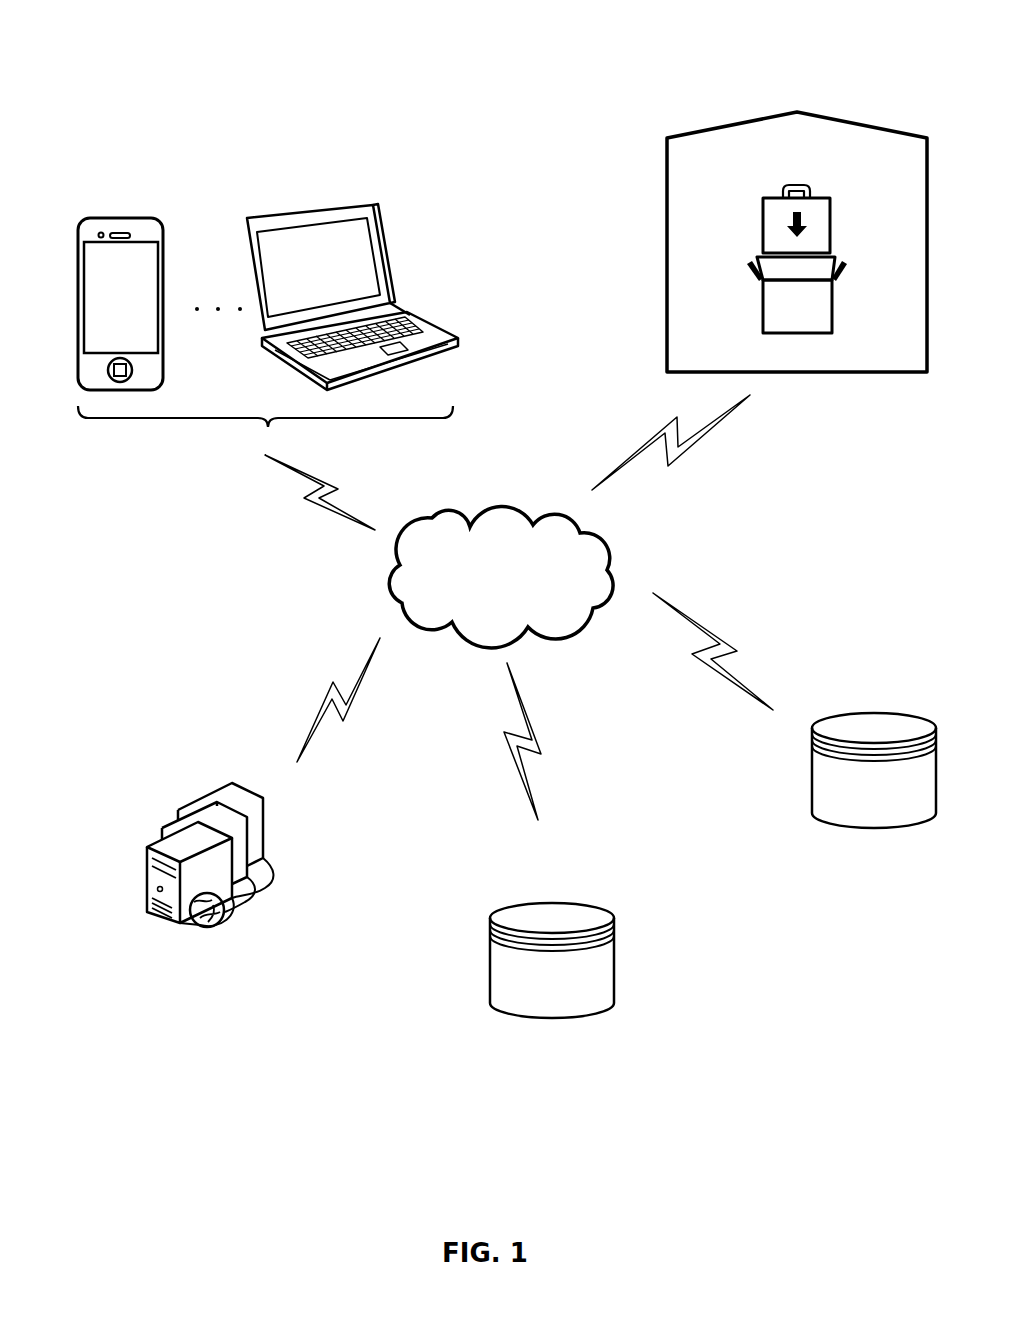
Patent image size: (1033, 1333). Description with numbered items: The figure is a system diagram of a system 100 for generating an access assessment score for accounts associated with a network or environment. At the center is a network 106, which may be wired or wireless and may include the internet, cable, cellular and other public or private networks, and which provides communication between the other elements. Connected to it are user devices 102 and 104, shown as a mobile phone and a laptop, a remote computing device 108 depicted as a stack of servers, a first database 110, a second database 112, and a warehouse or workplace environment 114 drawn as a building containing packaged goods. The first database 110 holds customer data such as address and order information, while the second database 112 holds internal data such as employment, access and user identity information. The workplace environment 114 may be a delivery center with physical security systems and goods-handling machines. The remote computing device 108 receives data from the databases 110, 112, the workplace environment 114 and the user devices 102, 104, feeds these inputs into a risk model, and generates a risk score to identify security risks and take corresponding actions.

The system 100 is at (85, 60).
The user device 102 is at (133, 218).
The user device 104 is at (337, 209).
The network 106 is at (427, 520).
The remote computing device 108 is at (200, 795).
The first database 110 is at (840, 714).
The second database 112 is at (597, 906).
The workplace environment 114 is at (789, 111).